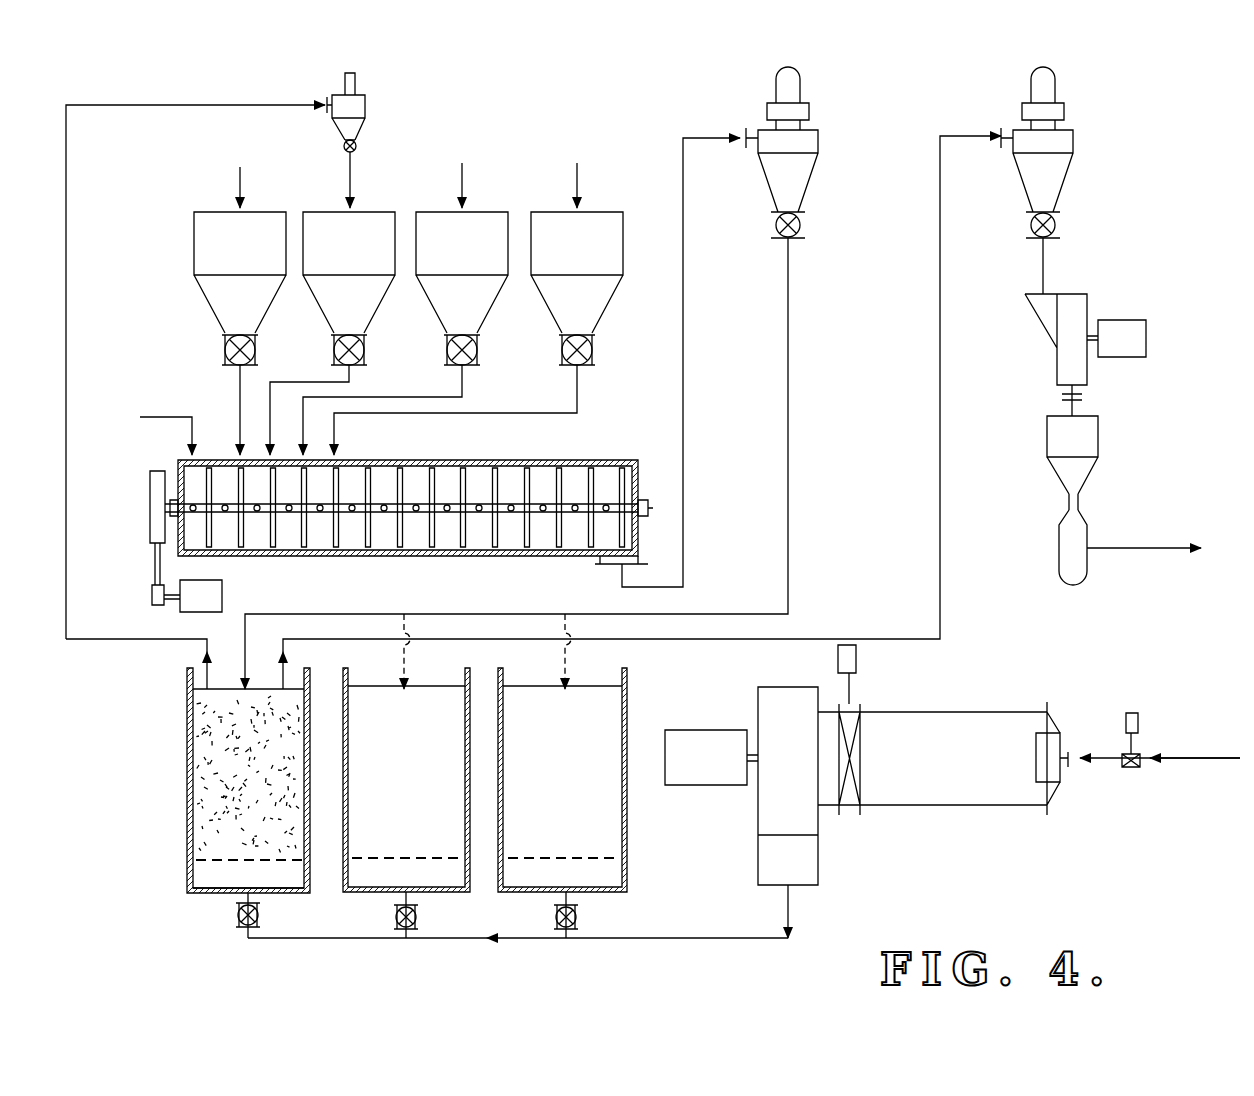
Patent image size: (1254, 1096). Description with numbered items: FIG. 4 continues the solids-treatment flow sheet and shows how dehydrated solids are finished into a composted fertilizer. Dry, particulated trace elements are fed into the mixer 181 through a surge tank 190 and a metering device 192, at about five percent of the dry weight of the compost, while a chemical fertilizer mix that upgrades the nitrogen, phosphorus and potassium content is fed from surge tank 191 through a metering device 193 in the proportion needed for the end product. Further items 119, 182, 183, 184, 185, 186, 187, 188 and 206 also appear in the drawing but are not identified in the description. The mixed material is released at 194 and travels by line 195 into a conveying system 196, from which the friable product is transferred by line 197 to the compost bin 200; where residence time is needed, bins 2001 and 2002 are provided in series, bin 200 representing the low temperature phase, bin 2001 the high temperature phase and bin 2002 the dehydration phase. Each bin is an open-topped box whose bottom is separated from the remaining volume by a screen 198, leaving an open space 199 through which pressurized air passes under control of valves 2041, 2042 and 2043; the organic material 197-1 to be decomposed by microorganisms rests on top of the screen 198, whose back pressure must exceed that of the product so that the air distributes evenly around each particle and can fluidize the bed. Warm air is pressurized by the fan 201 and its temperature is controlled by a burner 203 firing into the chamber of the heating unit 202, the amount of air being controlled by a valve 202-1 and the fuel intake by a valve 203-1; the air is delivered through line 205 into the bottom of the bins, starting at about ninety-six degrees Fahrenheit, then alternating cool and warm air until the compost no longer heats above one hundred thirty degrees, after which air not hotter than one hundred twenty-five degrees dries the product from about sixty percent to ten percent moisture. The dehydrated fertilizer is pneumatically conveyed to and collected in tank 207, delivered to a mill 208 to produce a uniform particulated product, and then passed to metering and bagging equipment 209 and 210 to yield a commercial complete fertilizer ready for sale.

The feed stream 119 is at (168, 412).
The mixer 181 is at (590, 462).
The recycle gas line 182 is at (66, 297).
The separator 183 is at (366, 108).
The valve 184 is at (357, 147).
The hopper 185 is at (361, 258).
The hopper 186 is at (252, 258).
The rotary valve 187 is at (224, 352).
The rotary valve 188 is at (365, 350).
The surge tank 190 is at (474, 258).
The surge tank 191 is at (589, 258).
The metering device 192 is at (478, 350).
The metering device 193 is at (593, 350).
The release point 194 is at (612, 570).
The line 195 is at (683, 397).
The conveying system 196 is at (817, 178).
The line 197 is at (788, 428).
The organic material 197-1 is at (205, 712).
The screen 198 is at (200, 858).
The open space 199 is at (200, 878).
The compost bin 200 is at (200, 735).
The compost bin 2001 is at (412, 748).
The compost bin 2002 is at (569, 748).
The fan 201 is at (765, 822).
The heating unit 202 is at (935, 795).
The valve 202-1 is at (860, 740).
The burner 203 is at (1050, 770).
The valve 203-1 is at (1138, 755).
The control valve 2041 is at (233, 917).
The control valve 2042 is at (393, 917).
The control valve 2043 is at (553, 917).
The line 205 is at (705, 940).
The conduit 206 is at (940, 350).
The tank 207 is at (1072, 180).
The mill 208 is at (1087, 375).
The metering equipment 209 is at (1090, 470).
The bagging equipment 210 is at (1087, 528).